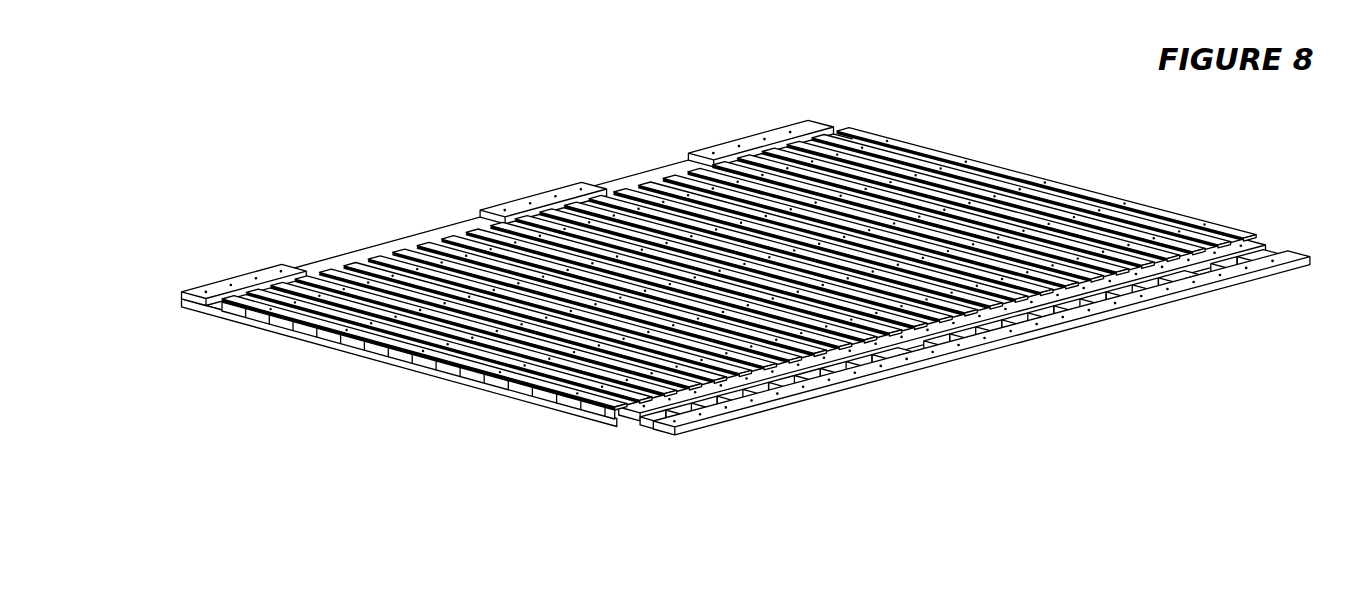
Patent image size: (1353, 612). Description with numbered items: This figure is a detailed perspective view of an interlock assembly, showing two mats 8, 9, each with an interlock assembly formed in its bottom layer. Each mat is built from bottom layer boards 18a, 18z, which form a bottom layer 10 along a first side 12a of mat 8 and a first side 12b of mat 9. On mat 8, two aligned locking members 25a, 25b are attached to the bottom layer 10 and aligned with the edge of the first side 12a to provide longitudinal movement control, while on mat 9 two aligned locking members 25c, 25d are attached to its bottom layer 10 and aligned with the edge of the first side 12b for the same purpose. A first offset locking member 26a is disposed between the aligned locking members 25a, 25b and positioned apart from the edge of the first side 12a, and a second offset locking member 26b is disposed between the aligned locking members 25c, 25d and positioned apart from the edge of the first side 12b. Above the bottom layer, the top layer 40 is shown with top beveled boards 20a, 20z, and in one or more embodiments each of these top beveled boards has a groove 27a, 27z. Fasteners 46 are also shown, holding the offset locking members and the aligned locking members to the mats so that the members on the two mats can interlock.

The mat 8 is at (340, 212).
The mat 9 is at (675, 128).
The bottom layer 10 is at (490, 380).
The first side 12a is at (803, 398).
The first side 12b is at (1125, 312).
The bottom layer board 18a is at (676, 424).
The bottom layer board 18z is at (1297, 250).
The top beveled board 20a is at (628, 398).
The top beveled board 20z is at (1243, 228).
The aligned locking member 25a is at (718, 406).
The aligned locking member 25b is at (938, 347).
The aligned locking member 25c is at (1038, 323).
The aligned locking member 25d is at (1236, 270).
The first offset locking member 26a is at (836, 372).
The second offset locking member 26b is at (1160, 296).
The groove 27a is at (250, 282).
The groove 27z is at (858, 120).
The top layer 40 is at (1008, 152).
The fasteners 46 is at (543, 190).